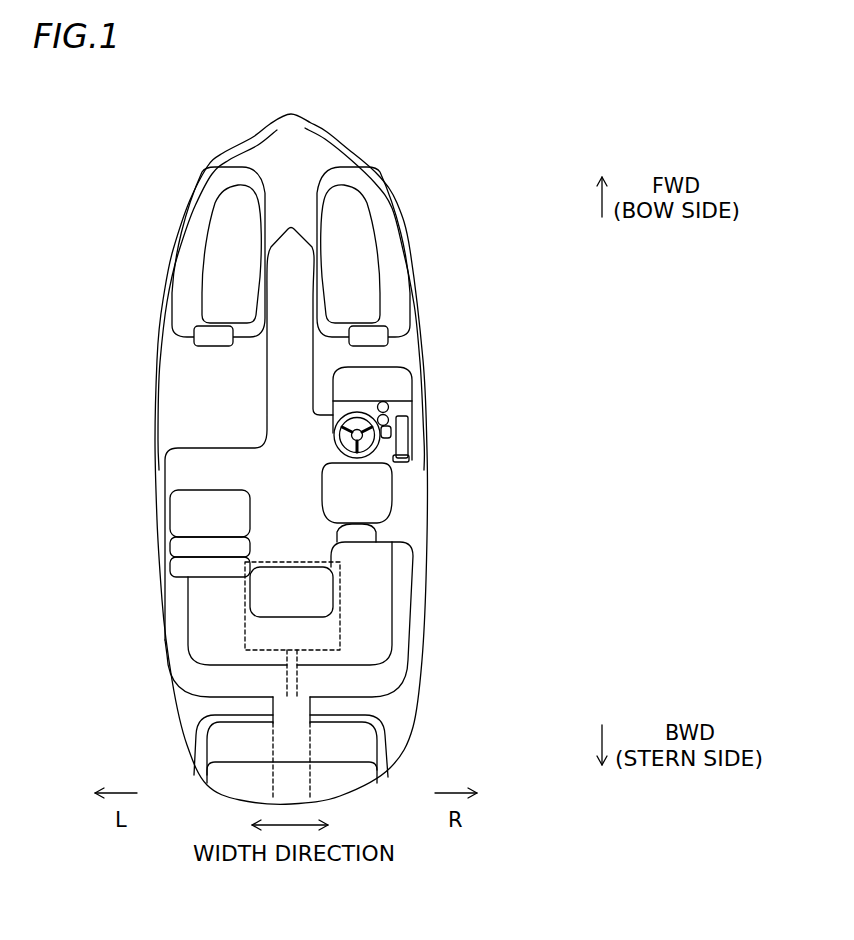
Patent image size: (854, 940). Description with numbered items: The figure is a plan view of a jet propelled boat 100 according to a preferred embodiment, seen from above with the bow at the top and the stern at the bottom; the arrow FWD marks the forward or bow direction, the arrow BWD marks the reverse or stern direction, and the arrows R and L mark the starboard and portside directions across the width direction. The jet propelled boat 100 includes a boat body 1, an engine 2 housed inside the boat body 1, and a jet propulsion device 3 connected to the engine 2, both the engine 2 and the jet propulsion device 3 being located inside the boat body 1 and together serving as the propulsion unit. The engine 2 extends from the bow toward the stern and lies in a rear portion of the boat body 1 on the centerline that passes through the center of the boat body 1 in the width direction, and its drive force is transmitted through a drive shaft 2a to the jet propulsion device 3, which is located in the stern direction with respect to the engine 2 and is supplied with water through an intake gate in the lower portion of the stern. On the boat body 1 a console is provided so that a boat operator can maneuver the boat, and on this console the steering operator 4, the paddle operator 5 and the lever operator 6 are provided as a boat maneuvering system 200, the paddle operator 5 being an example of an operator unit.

The jet propelled boat 100 is at (431, 110).
The boat body 1 is at (402, 192).
The boat maneuvering system 200 is at (457, 439).
The steering operator 4 is at (381, 430).
The paddle operator 5 is at (387, 456).
The lever operator 6 is at (400, 432).
The engine 2 is at (340, 610).
The drive shaft 2a is at (297, 677).
The jet propulsion device 3 is at (312, 750).